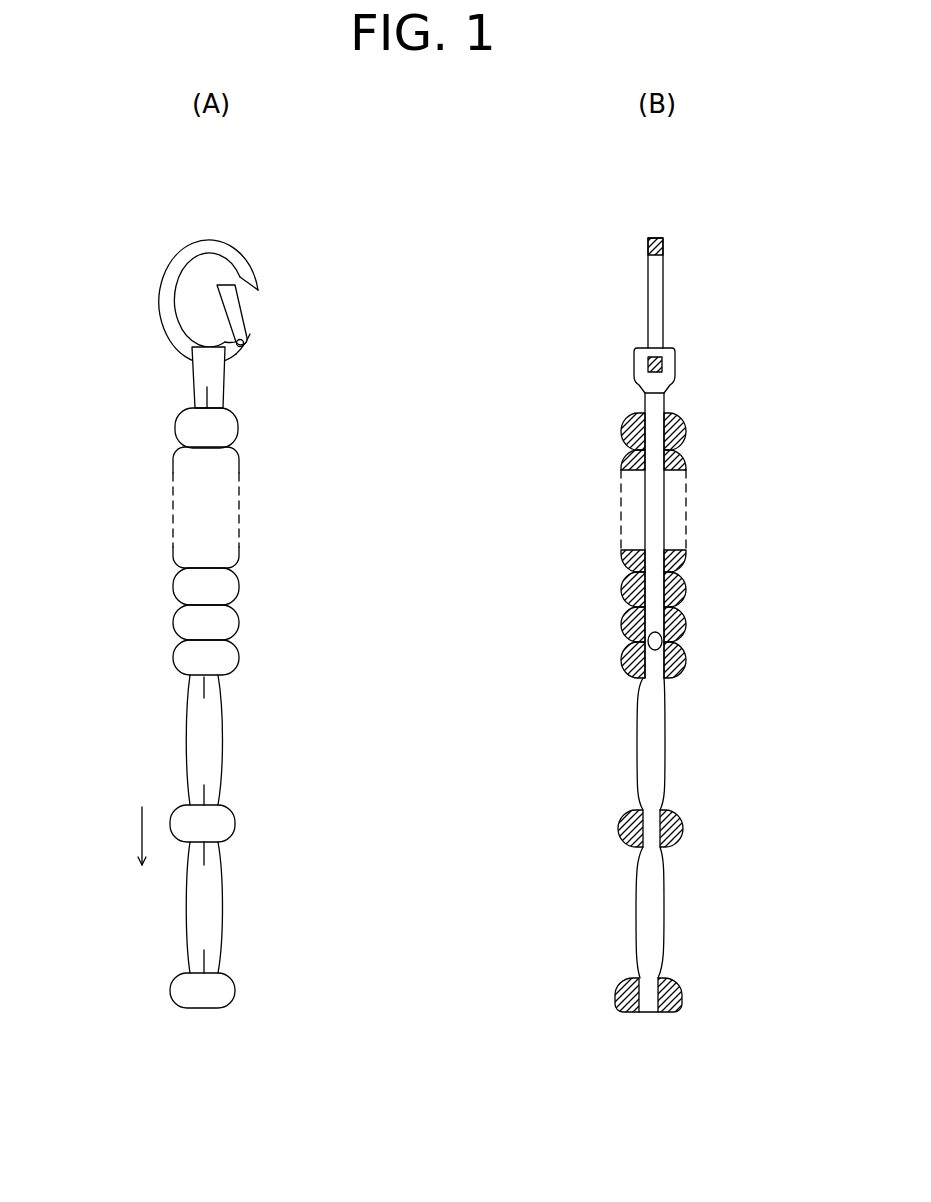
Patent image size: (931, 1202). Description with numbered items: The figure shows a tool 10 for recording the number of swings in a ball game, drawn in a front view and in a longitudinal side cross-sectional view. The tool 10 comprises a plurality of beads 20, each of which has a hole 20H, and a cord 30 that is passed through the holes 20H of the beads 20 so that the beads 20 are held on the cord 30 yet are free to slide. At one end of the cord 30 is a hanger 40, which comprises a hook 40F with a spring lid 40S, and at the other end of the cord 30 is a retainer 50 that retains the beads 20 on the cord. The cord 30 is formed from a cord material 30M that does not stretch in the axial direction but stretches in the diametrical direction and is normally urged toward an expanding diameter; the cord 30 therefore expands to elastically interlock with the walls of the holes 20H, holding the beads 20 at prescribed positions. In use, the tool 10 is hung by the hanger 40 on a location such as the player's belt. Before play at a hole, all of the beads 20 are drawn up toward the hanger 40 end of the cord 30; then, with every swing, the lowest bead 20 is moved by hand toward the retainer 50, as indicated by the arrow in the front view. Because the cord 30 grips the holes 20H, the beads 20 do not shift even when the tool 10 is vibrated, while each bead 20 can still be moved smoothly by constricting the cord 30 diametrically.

The tool for recording the number of swings 10 is at (318, 250).
The bead 20 is at (240, 425).
The hole 20H is at (687, 653).
The cord 30 is at (223, 733).
The cord material 30M is at (323, 832).
The hanger 40 is at (243, 247).
The hook 40F is at (174, 268).
The spring lid 40S is at (244, 310).
The retainer 50 is at (203, 996).